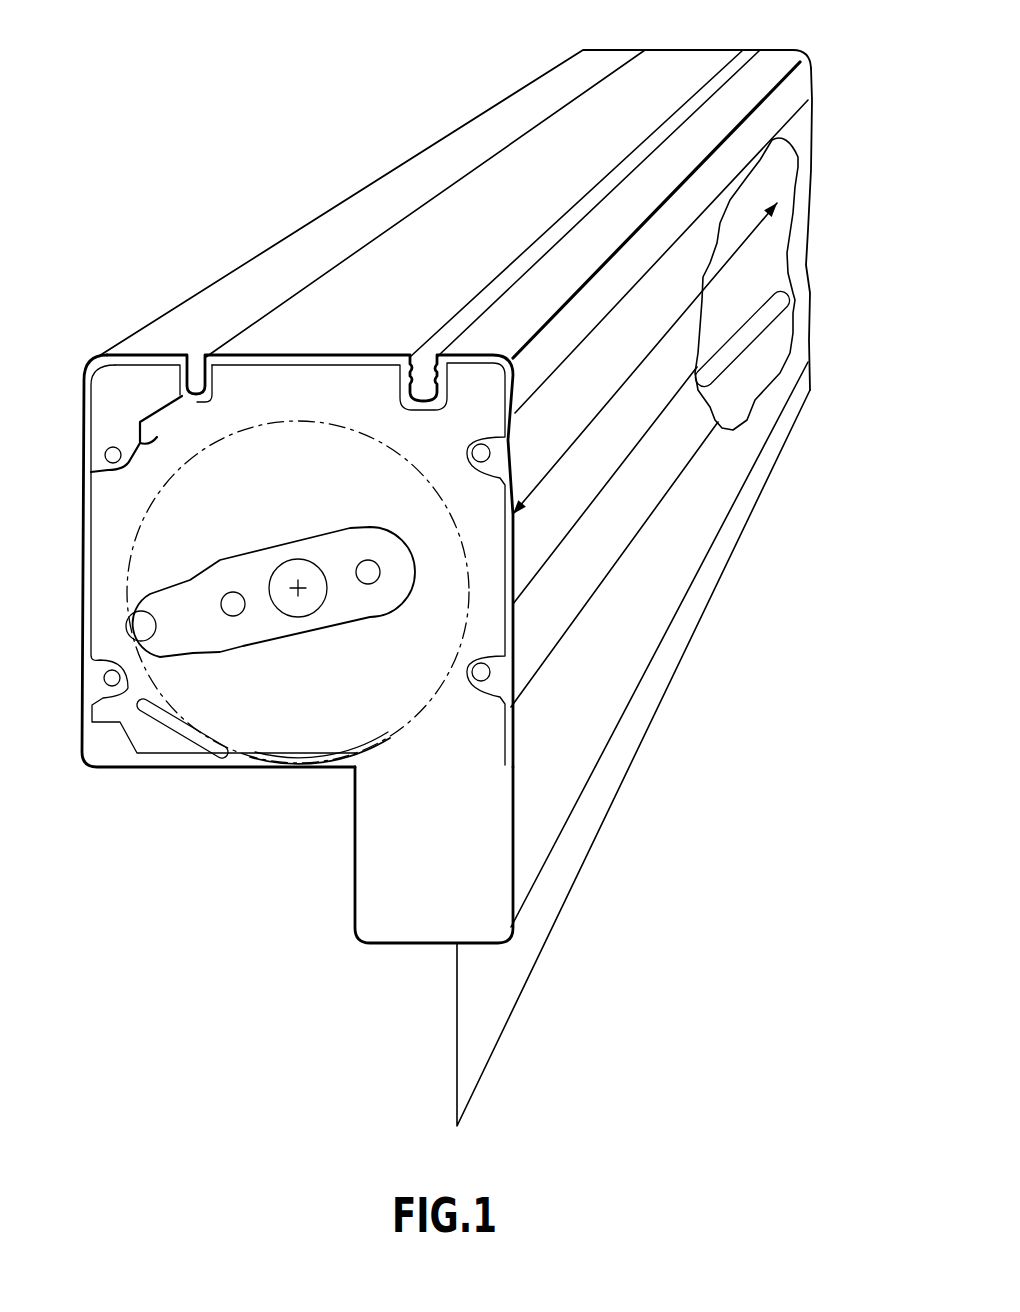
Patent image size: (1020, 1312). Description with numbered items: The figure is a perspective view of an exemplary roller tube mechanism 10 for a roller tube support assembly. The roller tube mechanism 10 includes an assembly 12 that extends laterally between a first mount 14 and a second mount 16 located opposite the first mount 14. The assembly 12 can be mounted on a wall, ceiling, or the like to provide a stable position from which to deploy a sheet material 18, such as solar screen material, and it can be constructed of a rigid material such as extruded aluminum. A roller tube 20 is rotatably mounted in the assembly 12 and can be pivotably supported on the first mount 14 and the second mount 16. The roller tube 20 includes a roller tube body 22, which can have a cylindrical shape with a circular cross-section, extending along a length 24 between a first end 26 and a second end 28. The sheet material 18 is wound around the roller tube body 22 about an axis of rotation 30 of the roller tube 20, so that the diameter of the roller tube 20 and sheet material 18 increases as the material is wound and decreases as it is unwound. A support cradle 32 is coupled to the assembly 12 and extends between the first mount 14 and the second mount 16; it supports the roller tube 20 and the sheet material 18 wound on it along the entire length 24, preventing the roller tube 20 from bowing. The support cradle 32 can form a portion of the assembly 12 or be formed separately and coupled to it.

The roller tube mechanism 10 is at (368, 122).
The assembly 12 is at (185, 272).
The first mount 14 is at (353, 818).
The second mount 16 is at (840, 98).
The sheet material 18 is at (617, 793).
The roller tube 20 is at (273, 477).
The roller tube body 22 is at (280, 740).
The length 24 is at (619, 393).
The first end 26 is at (120, 523).
The second end 28 is at (783, 160).
The axis of rotation 30 is at (297, 587).
The support cradle 32 is at (205, 778).